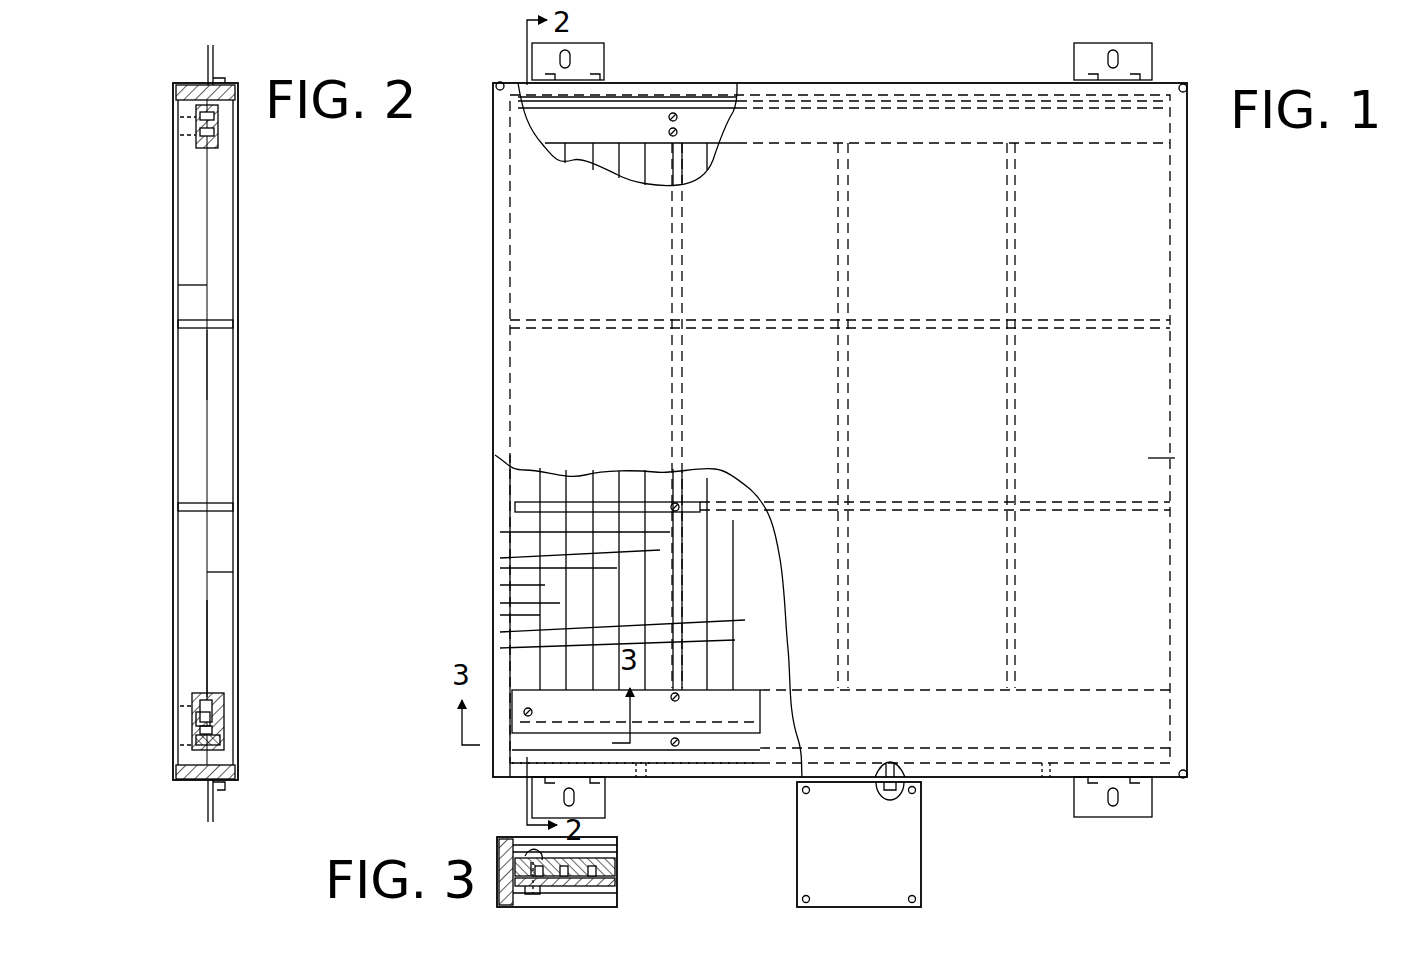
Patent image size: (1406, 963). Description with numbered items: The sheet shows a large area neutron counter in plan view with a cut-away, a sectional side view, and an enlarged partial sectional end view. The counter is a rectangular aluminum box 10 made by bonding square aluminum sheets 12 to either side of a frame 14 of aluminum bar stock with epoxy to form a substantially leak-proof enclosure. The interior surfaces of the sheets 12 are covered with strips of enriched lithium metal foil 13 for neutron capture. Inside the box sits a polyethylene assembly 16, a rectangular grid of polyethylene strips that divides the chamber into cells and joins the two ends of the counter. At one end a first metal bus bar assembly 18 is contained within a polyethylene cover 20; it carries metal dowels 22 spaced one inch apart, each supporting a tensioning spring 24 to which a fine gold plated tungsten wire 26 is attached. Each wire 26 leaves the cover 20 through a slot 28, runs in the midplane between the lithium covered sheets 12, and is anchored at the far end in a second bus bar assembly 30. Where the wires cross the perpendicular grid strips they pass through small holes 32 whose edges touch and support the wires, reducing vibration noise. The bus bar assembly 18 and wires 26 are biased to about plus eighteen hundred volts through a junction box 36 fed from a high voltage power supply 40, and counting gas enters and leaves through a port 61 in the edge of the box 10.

In FIG. 2, the rectangular aluminum box 10 is at (205, 431).
In FIG. 1, the rectangular aluminum box 10 is at (1187, 283).
In FIG. 2, the aluminum sheets 12 is at (207, 285).
In FIG. 1, the aluminum sheets 12 is at (1175, 458).
In FIG. 2, the lithium metal foil 13 is at (228, 118).
In FIG. 2, the frame 14 is at (190, 83).
In FIG. 1, the frame 14 is at (513, 777).
In FIG. 3, the frame 14 is at (557, 872).
In FIG. 2, the polyethylene assembly 16 is at (188, 330).
In FIG. 1, the polyethylene assembly 16 is at (515, 528).
In FIG. 1, the first metal bus bar assembly 18 is at (735, 742).
In FIG. 3, the first metal bus bar assembly 18 is at (617, 868).
In FIG. 2, the polyethylene cover 20 is at (222, 740).
In FIG. 3, the polyethylene cover 20 is at (615, 885).
In FIG. 3, the metal dowels 22 is at (545, 861).
In FIG. 2, the tensioning spring 24 is at (198, 718).
In FIG. 2, the gold plated tungsten wire 26 is at (207, 572).
In FIG. 1, the gold plated tungsten wire 26 is at (500, 532).
In FIG. 2, the slot 28 is at (207, 700).
In FIG. 1, the second bus bar assembly 30 is at (650, 128).
In FIG. 2, the holes 32 is at (215, 330).
In FIG. 1, the junction box 36 is at (921, 855).
In FIG. 1, the high voltage power supply 40 is at (797, 838).
In FIG. 1, the port 61 is at (641, 777).